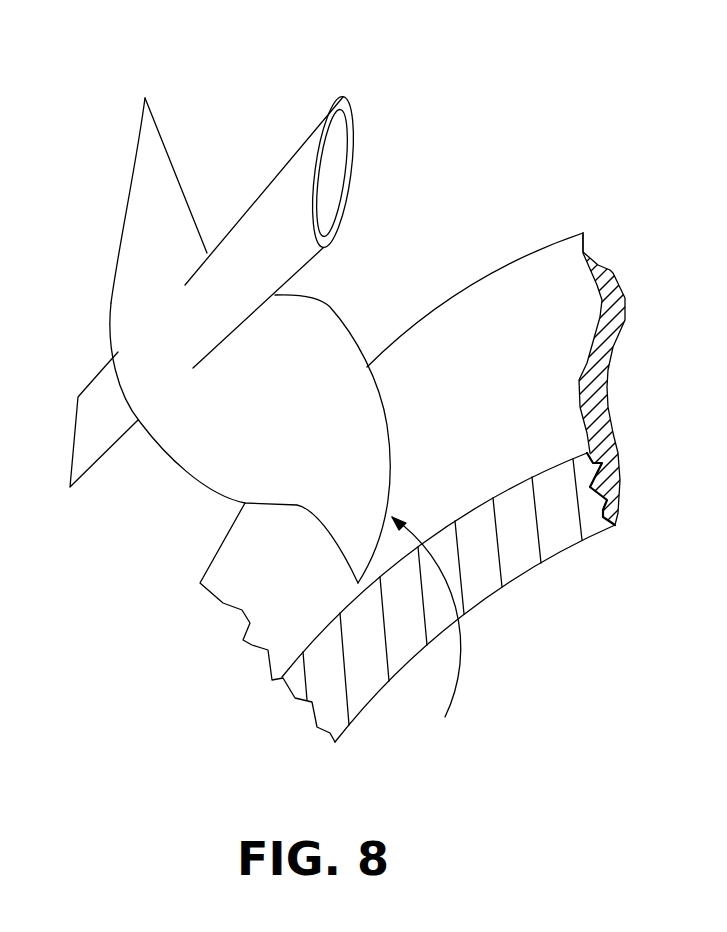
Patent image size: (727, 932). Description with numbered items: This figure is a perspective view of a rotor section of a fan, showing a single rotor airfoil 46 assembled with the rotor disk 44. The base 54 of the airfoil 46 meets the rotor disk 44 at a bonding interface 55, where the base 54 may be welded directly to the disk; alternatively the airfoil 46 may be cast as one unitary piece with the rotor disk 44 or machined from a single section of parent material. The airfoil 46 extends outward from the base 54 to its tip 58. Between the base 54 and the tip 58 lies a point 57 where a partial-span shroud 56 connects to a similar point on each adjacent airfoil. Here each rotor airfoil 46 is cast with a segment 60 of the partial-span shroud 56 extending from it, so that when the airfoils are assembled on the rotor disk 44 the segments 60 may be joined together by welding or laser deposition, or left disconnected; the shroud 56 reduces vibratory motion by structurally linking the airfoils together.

The rotor disk 44 is at (482, 568).
The rotor airfoil 46 is at (220, 440).
The base 54 is at (352, 437).
The bonding interface 55 is at (426, 632).
The partial-span shroud 56 is at (273, 209).
The point 57 is at (200, 330).
The tip 58 is at (140, 218).
The segment 60 is at (255, 212).